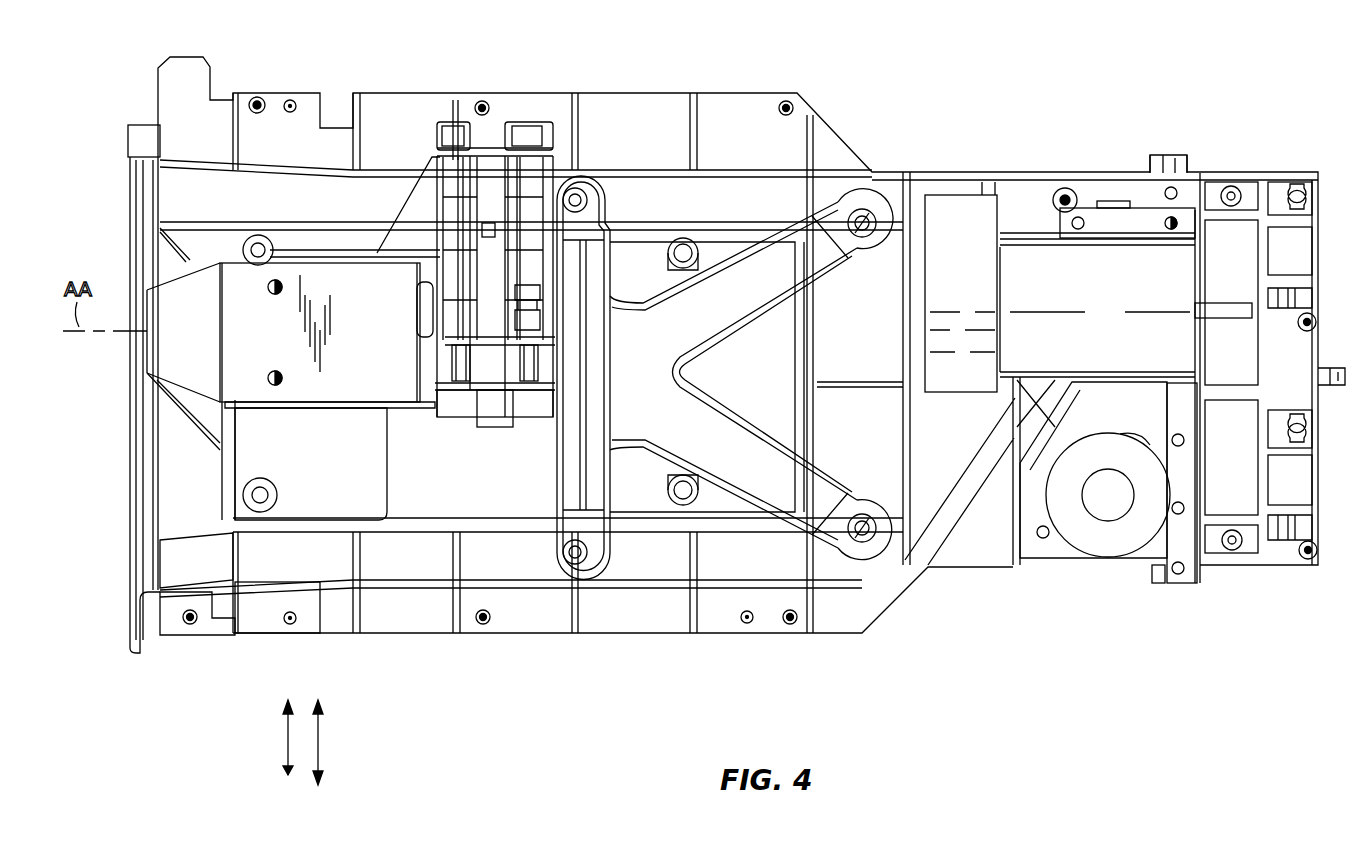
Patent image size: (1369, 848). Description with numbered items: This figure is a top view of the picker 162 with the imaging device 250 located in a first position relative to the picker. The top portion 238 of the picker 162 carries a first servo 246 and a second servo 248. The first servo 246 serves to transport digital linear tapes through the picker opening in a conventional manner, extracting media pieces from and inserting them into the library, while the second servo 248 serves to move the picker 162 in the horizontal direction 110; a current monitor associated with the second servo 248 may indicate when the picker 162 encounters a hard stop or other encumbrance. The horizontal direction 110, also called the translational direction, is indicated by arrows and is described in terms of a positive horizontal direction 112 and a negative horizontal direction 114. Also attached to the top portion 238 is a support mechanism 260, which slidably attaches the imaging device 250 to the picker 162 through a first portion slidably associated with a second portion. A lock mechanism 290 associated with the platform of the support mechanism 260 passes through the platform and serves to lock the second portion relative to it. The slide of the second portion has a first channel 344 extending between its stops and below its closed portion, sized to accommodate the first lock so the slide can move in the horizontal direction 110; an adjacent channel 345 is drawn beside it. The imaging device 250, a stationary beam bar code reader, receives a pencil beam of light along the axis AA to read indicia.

The picker 162 is at (988, 52).
The imaging device 250 is at (146, 360).
The lock mechanism 290 is at (448, 370).
The first channel 344 is at (461, 392).
The second cylinder 345 is at (530, 392).
The support mechanism 260 is at (620, 207).
The first servo 246 is at (1117, 237).
The top portion 238 is at (1019, 565).
The second servo 248 is at (1109, 560).
The horizontal direction 110 is at (322, 740).
The positive horizontal direction 112 is at (285, 727).
The negative horizontal direction 114 is at (285, 757).